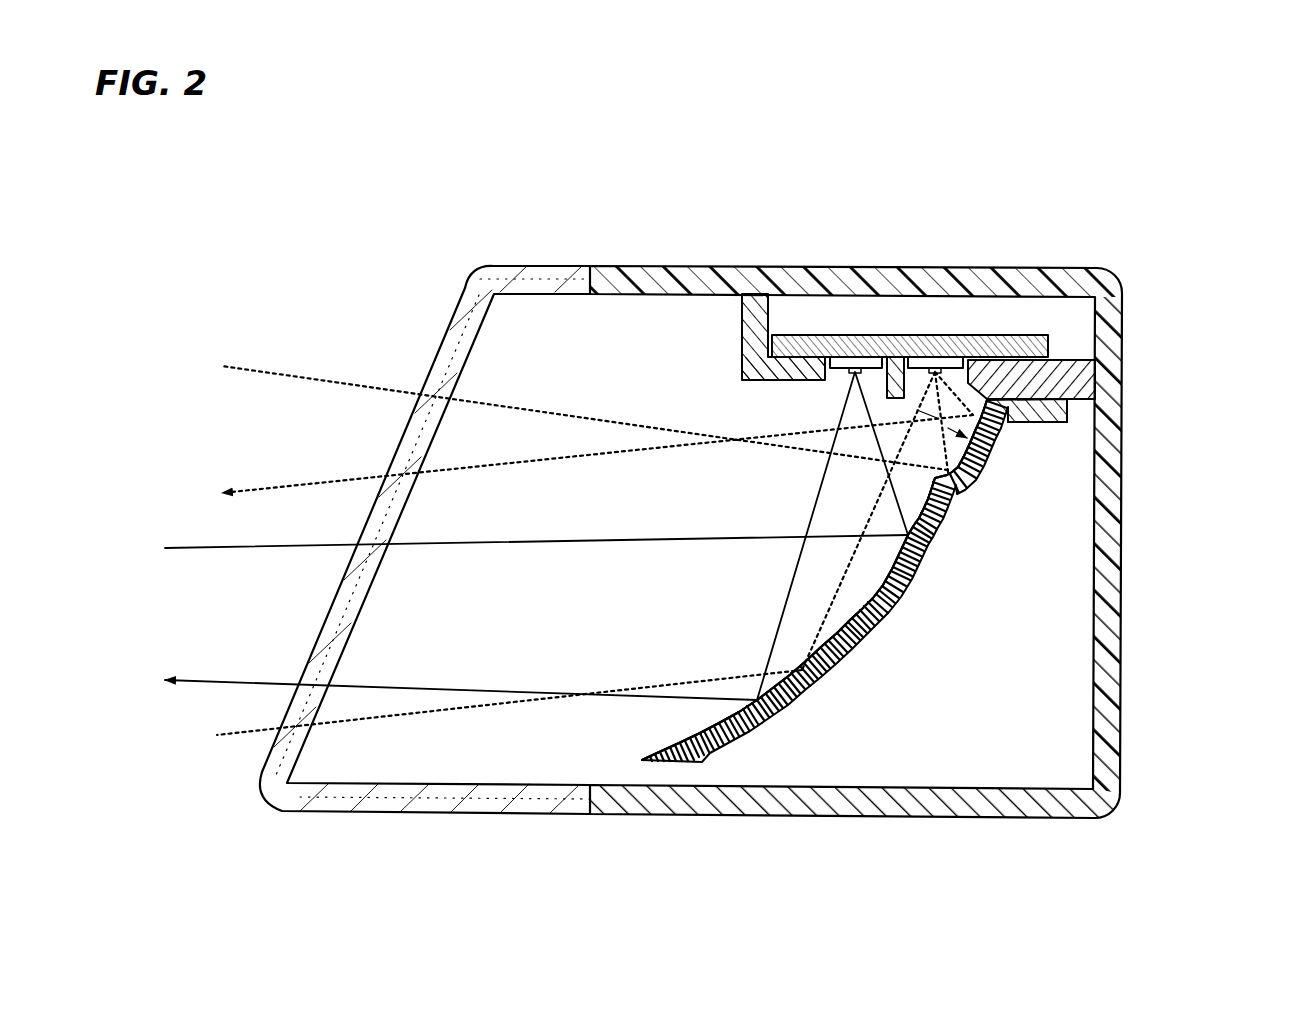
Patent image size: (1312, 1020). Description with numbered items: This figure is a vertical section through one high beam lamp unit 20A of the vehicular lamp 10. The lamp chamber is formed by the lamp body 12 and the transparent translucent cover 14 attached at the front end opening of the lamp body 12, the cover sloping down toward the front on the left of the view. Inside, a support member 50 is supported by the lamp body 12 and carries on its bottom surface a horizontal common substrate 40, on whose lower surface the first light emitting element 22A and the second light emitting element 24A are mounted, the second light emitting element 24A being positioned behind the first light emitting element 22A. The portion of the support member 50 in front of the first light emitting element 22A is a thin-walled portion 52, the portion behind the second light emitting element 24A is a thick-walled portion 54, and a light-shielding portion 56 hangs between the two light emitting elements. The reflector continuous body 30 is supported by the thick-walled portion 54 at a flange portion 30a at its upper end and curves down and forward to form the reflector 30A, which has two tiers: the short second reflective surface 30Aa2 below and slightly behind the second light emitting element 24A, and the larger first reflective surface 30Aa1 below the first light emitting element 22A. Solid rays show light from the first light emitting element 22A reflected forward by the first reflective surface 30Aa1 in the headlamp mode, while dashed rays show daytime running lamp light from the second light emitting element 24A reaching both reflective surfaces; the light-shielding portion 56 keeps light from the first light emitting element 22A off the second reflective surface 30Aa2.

The vehicular lamp 10 is at (355, 210).
The lamp body 12 is at (1123, 312).
The translucent cover 14 is at (437, 350).
The lamp unit 20A is at (638, 498).
The first light emitting element 22A is at (863, 335).
The second light emitting element 24A is at (942, 338).
The reflector continuous body 30 is at (878, 647).
The reflector 30A is at (907, 593).
The first reflective surface 30Aa1 is at (831, 641).
The second reflective surface 30Aa2 is at (950, 453).
The flange portion 30a is at (1027, 413).
The substrate 40 is at (1027, 332).
The support member 50 is at (738, 362).
The thin-walled portion 52 is at (785, 380).
The thick-walled portion 54 is at (1075, 383).
The light-shielding portion 56 is at (895, 398).